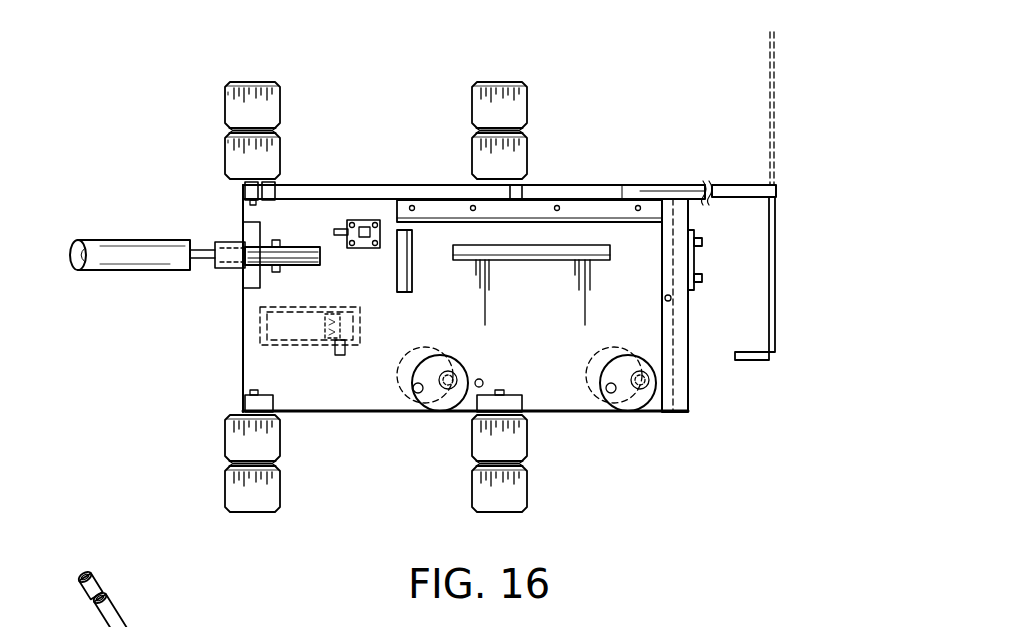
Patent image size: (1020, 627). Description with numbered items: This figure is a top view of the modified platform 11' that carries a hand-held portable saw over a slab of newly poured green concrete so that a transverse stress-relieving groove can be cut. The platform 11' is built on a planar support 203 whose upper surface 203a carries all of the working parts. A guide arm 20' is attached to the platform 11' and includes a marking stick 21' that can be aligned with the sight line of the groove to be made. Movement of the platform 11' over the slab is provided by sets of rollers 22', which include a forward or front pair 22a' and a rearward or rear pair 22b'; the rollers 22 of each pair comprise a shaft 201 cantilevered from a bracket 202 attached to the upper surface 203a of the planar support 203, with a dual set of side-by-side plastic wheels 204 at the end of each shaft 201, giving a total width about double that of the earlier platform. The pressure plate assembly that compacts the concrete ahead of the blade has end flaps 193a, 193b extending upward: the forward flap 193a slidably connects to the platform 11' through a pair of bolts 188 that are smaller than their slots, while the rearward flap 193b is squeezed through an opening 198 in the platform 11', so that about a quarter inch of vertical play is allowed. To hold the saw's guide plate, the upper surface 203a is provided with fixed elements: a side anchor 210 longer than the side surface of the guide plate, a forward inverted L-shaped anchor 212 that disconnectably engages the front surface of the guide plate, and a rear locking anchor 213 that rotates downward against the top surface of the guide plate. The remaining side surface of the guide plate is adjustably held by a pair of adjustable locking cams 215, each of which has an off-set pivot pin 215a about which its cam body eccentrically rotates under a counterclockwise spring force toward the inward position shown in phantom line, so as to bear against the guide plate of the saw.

The modified platform 11' is at (485, 219).
The guide arm 20' is at (509, 118).
The marking stick 21' is at (788, 278).
The rollers 22 is at (296, 109).
The sets of rollers 22' is at (482, 290).
The forward pair of rollers 22a' is at (603, 483).
The rearward pair of rollers 22b' is at (240, 313).
The bolts 188 is at (706, 242).
The forward end flap 193a is at (694, 265).
The rearward end flap 193b is at (406, 283).
The opening 198 is at (403, 258).
The shaft 201 is at (272, 185).
The bracket 202 is at (272, 402).
The planar support 203 is at (625, 323).
The upper surface 203a is at (265, 364).
The plastic wheels 204 is at (228, 142).
The side anchor 210 is at (655, 208).
The forward inverted L-shaped anchor 212 is at (683, 398).
The rear locking anchor 213 is at (366, 222).
The adjustable locking cams 215 is at (658, 378).
The off-set pivot pin 215a is at (612, 386).